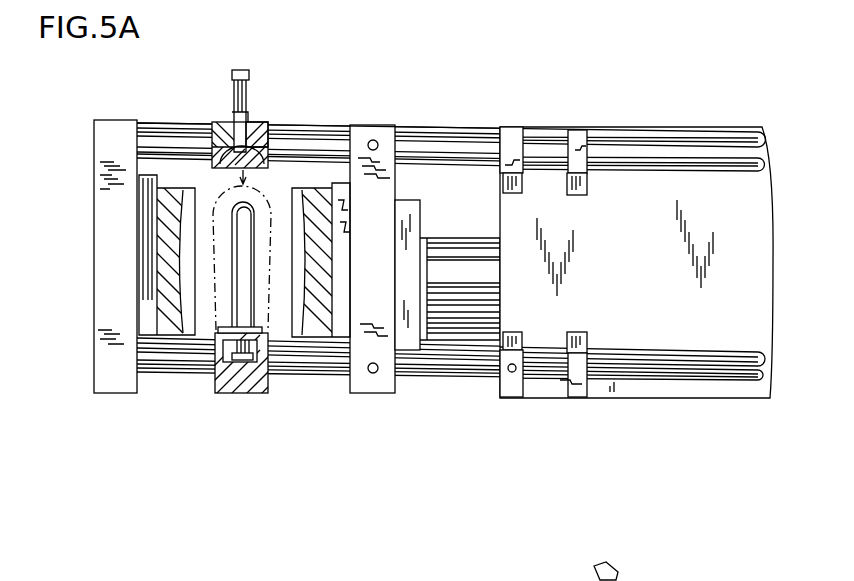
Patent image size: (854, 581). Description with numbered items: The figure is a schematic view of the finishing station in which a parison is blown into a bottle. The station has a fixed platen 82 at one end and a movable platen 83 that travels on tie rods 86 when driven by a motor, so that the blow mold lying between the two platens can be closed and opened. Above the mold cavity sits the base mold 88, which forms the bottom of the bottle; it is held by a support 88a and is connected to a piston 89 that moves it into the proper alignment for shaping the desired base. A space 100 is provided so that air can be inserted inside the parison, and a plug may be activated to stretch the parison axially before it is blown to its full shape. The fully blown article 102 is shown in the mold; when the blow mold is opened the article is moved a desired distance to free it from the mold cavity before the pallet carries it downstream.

The fixed platen 82 is at (104, 200).
The movable platen 83 is at (397, 190).
The tie rods 86 is at (463, 128).
The base mold 88 is at (257, 116).
The support 88a is at (259, 122).
The piston 89 is at (246, 70).
The space 100 is at (258, 326).
The blown article 102 is at (220, 190).